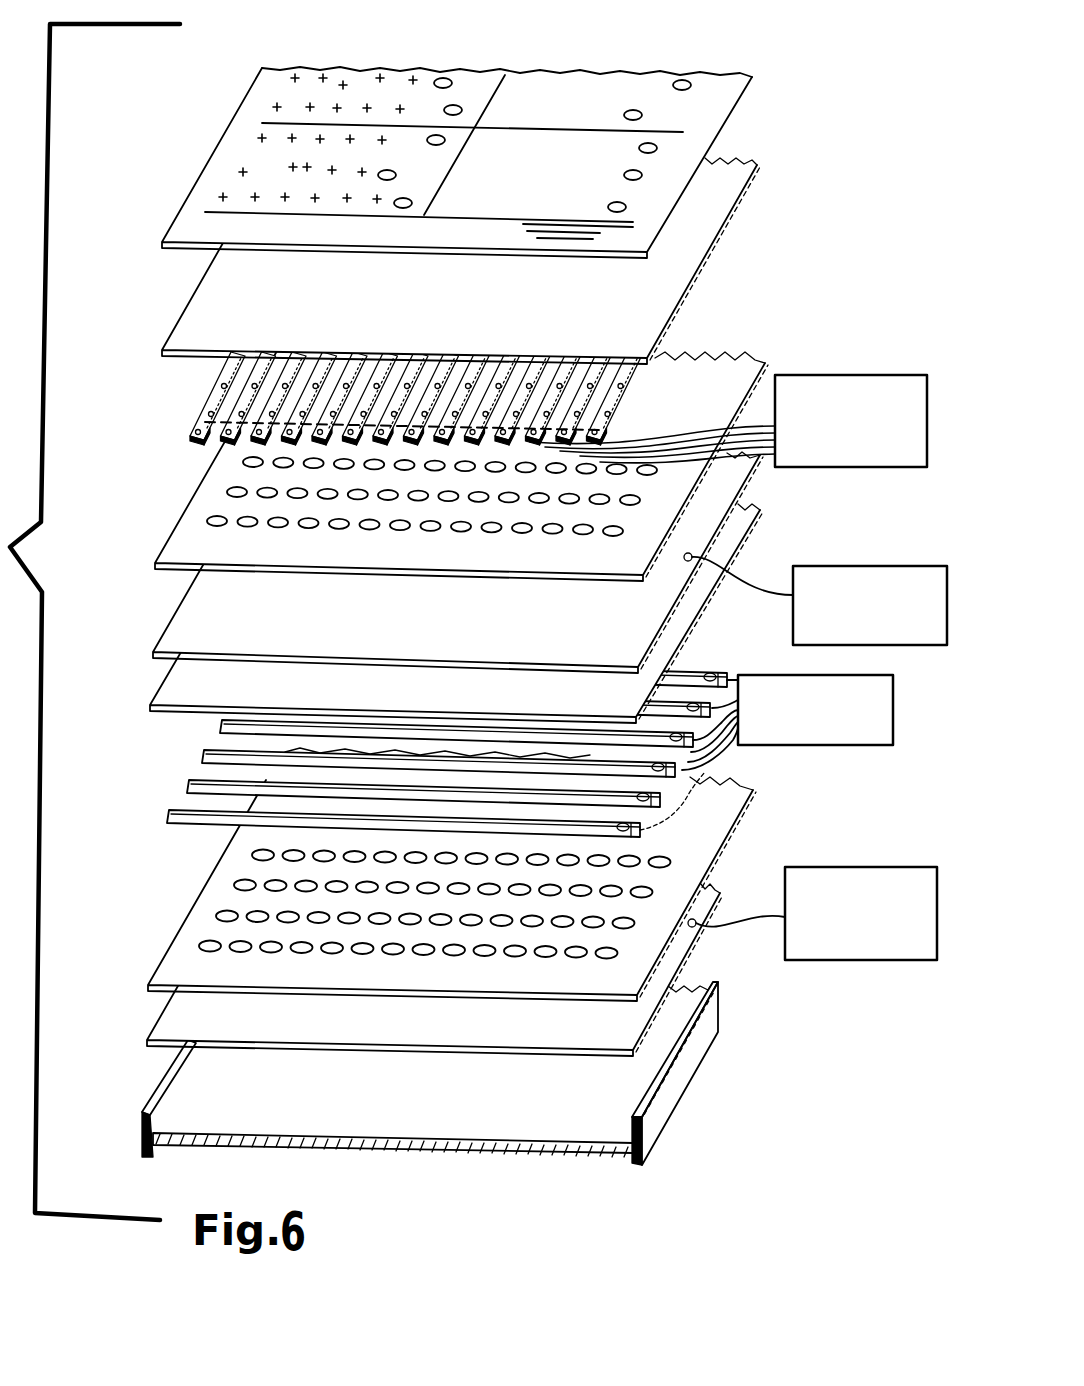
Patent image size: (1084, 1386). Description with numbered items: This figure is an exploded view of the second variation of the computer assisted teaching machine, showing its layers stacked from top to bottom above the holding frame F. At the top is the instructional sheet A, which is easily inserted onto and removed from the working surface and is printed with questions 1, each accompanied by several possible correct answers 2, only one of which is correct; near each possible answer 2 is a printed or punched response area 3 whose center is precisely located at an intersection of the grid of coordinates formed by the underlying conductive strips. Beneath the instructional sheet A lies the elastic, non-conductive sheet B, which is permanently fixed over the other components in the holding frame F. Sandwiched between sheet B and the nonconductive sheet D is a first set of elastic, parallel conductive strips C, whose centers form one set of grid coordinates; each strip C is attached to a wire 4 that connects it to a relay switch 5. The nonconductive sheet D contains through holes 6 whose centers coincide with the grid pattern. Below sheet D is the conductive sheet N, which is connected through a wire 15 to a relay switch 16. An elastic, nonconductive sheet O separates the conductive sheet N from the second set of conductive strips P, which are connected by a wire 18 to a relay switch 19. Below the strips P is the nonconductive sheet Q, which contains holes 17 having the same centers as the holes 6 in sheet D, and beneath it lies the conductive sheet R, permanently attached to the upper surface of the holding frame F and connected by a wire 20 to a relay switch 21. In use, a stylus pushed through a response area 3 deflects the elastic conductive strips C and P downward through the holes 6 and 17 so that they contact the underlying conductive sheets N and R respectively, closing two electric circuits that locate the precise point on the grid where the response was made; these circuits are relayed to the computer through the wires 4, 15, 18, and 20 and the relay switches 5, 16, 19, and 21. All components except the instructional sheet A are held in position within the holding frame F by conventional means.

The question 1 is at (360, 70).
The possible correct answer 2 is at (457, 70).
The response area 3 is at (632, 203).
The wire 4 is at (760, 447).
The relay switch 5 is at (850, 467).
The through hole 6 is at (240, 515).
The wire 15 is at (757, 593).
The relay switch 16 is at (920, 645).
The hole 17 is at (207, 937).
The wire 18 is at (720, 758).
The relay switch 19 is at (840, 747).
The wire 20 is at (737, 933).
The relay switch 21 is at (890, 960).
The instructional sheet A is at (250, 86).
The elastic non-conductive sheet B is at (215, 292).
The conductive strips C is at (250, 408).
The nonconductive sheet D is at (200, 537).
The conductive sheet N is at (222, 618).
The elastic nonconductive sheet O is at (225, 683).
The conductive strips P is at (163, 812).
The nonconductive sheet Q is at (185, 963).
The conductive sheet R is at (195, 1021).
The holding frame F is at (210, 1097).